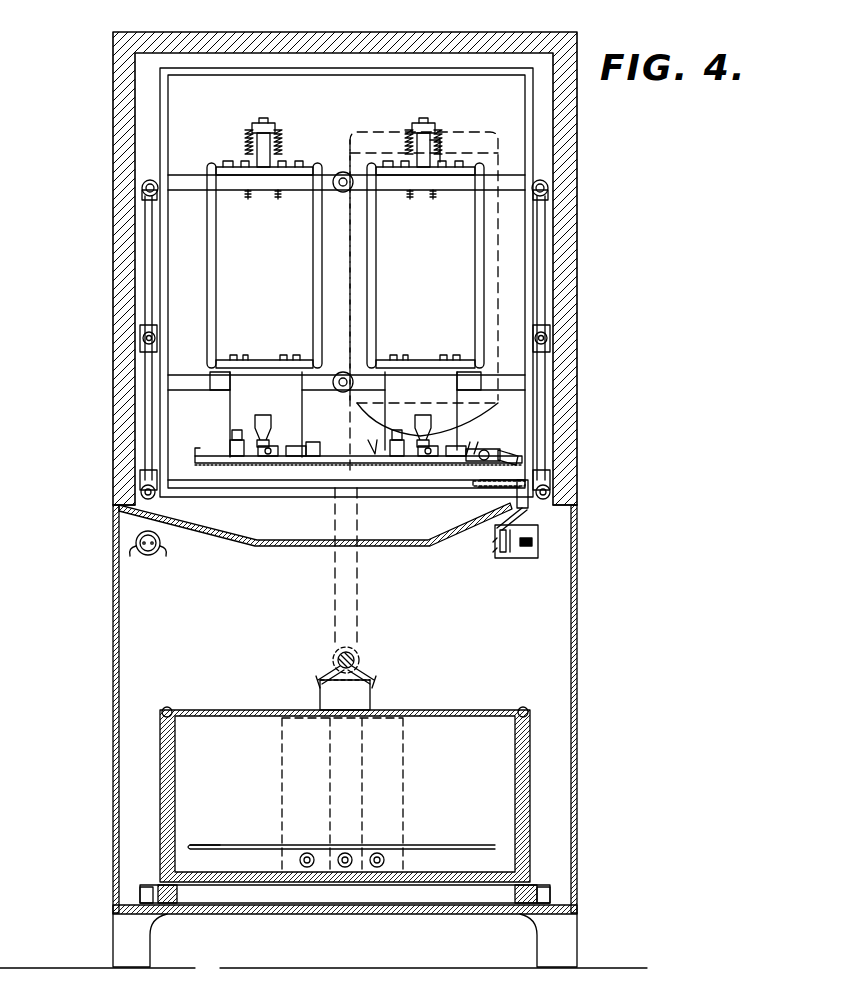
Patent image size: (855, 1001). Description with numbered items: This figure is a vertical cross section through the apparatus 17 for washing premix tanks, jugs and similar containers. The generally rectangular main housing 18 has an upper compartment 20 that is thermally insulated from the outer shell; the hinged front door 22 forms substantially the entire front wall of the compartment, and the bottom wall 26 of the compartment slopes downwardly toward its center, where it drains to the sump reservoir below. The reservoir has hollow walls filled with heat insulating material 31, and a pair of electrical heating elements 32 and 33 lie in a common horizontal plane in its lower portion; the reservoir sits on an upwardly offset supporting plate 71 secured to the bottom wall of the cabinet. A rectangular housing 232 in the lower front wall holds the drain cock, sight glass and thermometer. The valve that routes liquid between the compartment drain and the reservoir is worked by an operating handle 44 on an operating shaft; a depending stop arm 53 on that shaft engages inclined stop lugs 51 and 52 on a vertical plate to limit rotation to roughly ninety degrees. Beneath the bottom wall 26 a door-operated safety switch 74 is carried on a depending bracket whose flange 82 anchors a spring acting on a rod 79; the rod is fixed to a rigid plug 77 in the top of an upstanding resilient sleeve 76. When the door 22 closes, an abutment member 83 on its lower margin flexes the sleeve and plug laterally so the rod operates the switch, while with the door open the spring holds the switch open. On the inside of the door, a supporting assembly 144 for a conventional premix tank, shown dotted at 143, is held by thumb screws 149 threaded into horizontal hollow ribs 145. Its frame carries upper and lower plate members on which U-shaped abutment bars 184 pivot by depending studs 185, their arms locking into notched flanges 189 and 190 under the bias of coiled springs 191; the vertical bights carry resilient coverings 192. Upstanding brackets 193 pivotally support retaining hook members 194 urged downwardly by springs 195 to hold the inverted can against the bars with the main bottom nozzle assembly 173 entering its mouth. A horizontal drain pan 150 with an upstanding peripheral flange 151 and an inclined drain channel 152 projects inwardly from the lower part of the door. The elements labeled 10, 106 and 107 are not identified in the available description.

The container 10 is at (376, 449).
The apparatus 17 is at (590, 652).
The main housing 18 is at (579, 578).
The upper compartment 20 is at (137, 124).
The front door 22 is at (188, 90).
The bottom wall 26 is at (238, 531).
The heat insulating material 31 is at (155, 730).
The electrical heating element 32 is at (200, 845).
The electrical heating element 33 is at (222, 845).
The operating handle 44 is at (360, 597).
The stop lug 51 is at (378, 680).
The stop lug 52 is at (316, 680).
The stop arm 53 is at (345, 678).
The supporting plate 71 is at (336, 925).
The safety switch 74 is at (510, 560).
The resilient sleeve 76 is at (505, 520).
The rigid plug 77 is at (523, 472).
The rod 79 is at (520, 560).
The flange 82 is at (533, 540).
The abutment member 83 is at (490, 500).
The upper roller 106 is at (537, 196).
The middle roller 107 is at (535, 340).
The premix tank 143 is at (466, 136).
The supporting assembly 144 is at (513, 172).
The hollow rib 145 is at (192, 172).
The thumb screw 149 is at (340, 172).
The drain pan 150 is at (206, 460).
The peripheral flange 151 is at (198, 458).
The drain channel 152 is at (500, 455).
The main bottom nozzle assembly 173 is at (265, 415).
The abutment bar 184 is at (240, 160).
The stud portion 185 is at (279, 200).
The notched flange 189 is at (263, 170).
The notched flange 190 is at (262, 365).
The coiled spring 191 is at (248, 200).
The resilient covering 192 is at (210, 262).
The bracket 193 is at (418, 142).
The retaining hook member 194 is at (425, 123).
The spring 195 is at (440, 142).
The rectangular housing 232 is at (282, 762).